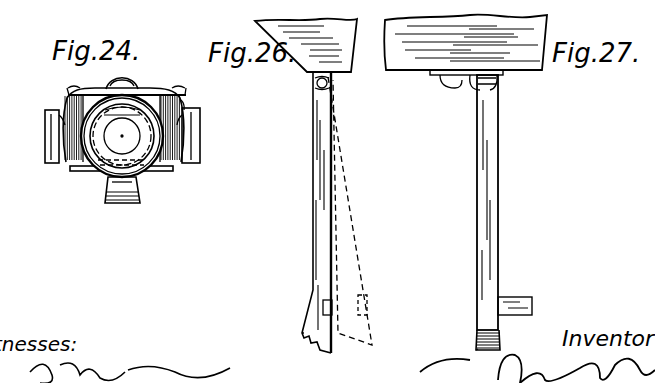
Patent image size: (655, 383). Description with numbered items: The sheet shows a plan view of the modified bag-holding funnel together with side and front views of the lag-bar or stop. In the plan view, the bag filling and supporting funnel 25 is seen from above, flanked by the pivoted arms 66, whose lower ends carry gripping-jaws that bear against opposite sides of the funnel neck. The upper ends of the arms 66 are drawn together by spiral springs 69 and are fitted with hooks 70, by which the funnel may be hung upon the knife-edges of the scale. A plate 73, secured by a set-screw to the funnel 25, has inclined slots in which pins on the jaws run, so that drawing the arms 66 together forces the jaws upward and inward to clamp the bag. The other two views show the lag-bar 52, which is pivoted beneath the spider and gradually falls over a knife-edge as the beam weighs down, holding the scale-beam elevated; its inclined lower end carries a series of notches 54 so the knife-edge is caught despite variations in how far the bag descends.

In FIG. 24, the bag filling and supporting funnel 25 is at (147, 154).
In FIG. 24, the arms 66 is at (45, 141).
In FIG. 24, the spiral springs 69 is at (105, 89).
In FIG. 24, the hooks 70 is at (189, 104).
In FIG. 24, the plate 73 is at (84, 172).
In FIG. 26, the lag-bar 52 is at (330, 206).
In FIG. 27, the lag-bar 52 is at (492, 198).
In FIG. 26, the notches 54 is at (301, 350).
In FIG. 27, the notches 54 is at (470, 358).